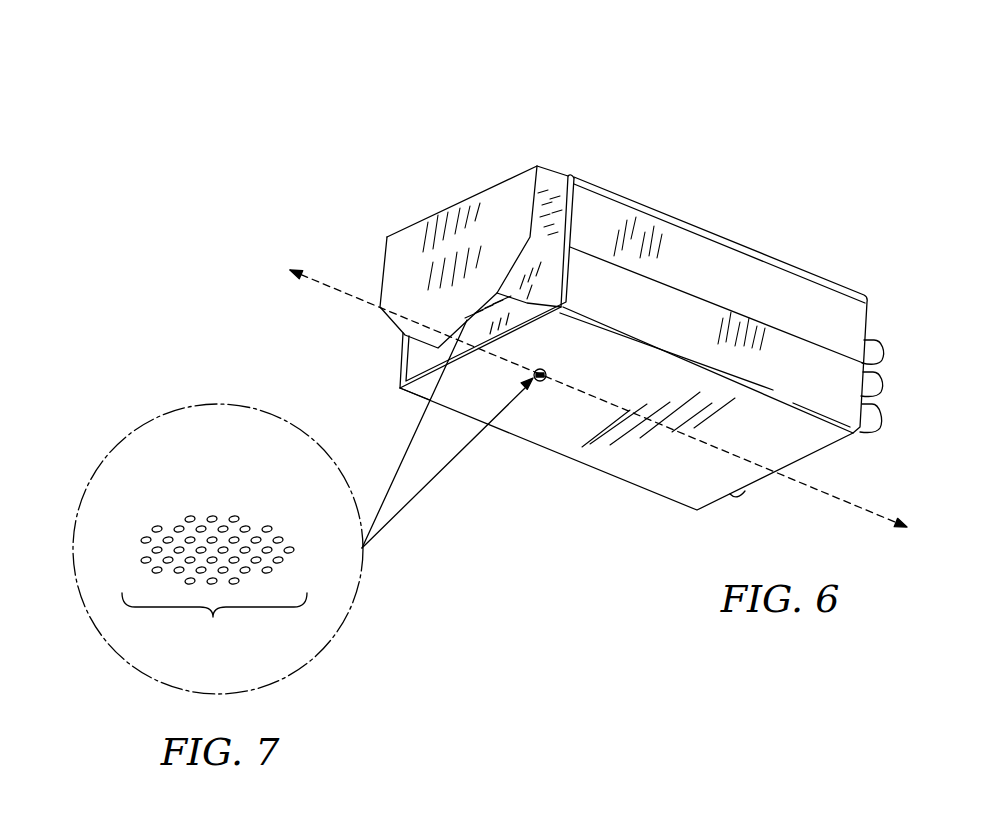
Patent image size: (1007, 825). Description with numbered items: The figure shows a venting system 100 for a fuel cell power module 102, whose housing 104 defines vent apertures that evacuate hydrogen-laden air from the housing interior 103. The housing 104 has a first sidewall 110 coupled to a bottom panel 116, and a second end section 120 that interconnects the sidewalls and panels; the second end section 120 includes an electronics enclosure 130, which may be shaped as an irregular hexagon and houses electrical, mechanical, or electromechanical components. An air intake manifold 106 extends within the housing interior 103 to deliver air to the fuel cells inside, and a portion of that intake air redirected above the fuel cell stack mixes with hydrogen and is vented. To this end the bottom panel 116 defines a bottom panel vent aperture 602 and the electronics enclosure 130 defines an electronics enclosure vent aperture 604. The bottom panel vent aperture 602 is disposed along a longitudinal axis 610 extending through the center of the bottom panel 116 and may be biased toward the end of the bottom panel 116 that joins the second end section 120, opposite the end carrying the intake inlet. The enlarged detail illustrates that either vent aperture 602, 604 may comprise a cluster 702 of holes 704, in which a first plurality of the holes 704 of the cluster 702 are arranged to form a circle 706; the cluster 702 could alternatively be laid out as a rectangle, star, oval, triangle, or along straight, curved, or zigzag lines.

In FIG. 6, the venting system 100 is at (278, 92).
In FIG. 6, the fuel cell power module 102 is at (758, 116).
In FIG. 6, the housing interior 103 is at (700, 390).
In FIG. 6, the housing 104 is at (565, 150).
In FIG. 6, the air intake manifold 106 is at (874, 333).
In FIG. 6, the first sidewall 110 is at (690, 232).
In FIG. 6, the bottom panel 116 is at (538, 418).
In FIG. 6, the second end section 120 is at (385, 360).
In FIG. 6, the electronics enclosure 130 is at (484, 177).
In FIG. 6, the bottom panel vent aperture 602 is at (552, 394).
In FIG. 7, the bottom panel vent aperture 602 is at (202, 501).
In FIG. 6, the electronics enclosure vent aperture 604 is at (455, 318).
In FIG. 7, the electronics enclosure vent aperture 604 is at (183, 392).
In FIG. 6, the longitudinal axis 610 is at (862, 510).
In FIG. 7, the cluster of holes 702 is at (260, 471).
In FIG. 7, the holes 704 is at (277, 537).
In FIG. 7, the circle 706 is at (213, 607).